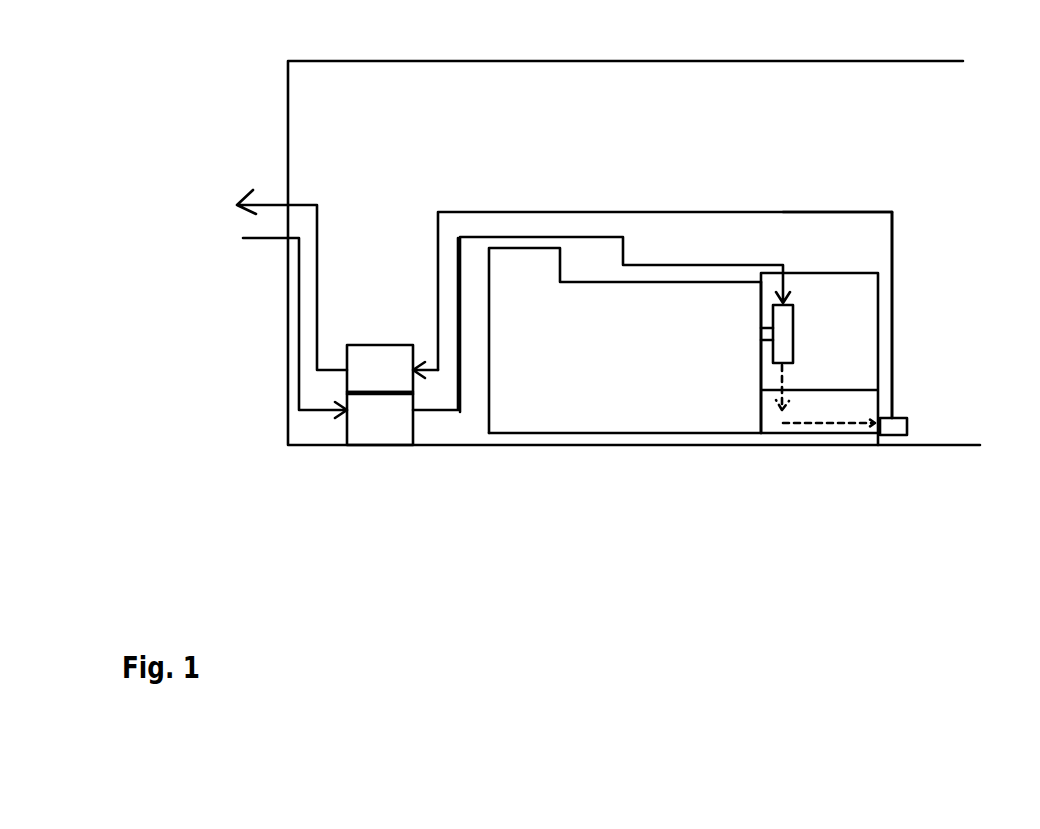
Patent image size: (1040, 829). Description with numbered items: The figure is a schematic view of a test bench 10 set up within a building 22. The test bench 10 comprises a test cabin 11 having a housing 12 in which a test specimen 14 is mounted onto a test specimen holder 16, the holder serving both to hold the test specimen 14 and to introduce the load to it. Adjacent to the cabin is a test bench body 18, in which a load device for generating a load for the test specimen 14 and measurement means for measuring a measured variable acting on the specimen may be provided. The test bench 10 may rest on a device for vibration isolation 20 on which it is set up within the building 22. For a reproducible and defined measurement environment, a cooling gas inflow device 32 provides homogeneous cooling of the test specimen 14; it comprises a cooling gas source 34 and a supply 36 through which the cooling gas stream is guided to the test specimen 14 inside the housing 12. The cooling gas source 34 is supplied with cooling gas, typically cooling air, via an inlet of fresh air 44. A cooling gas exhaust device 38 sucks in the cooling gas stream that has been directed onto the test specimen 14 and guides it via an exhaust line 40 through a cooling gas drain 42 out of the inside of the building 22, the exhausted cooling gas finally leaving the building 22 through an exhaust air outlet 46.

The test bench 10 is at (902, 181).
The test cabin 11 is at (880, 256).
The housing 12 is at (867, 320).
The test specimen 14 is at (793, 350).
The test specimen holder 16 is at (762, 345).
The test bench body 18 is at (625, 393).
The device for vibration isolation 20 is at (517, 447).
The building 22 is at (598, 62).
The cooling gas inflow device 32 is at (665, 252).
The cooling gas source 34 is at (387, 422).
The supply 36 is at (447, 412).
The cooling gas exhaust device 38 is at (799, 205).
The exhaust line 40 is at (562, 212).
The cooling gas drain 42 is at (378, 362).
The inlet of fresh air 44 is at (298, 370).
The exhaust air outlet 46 is at (300, 203).